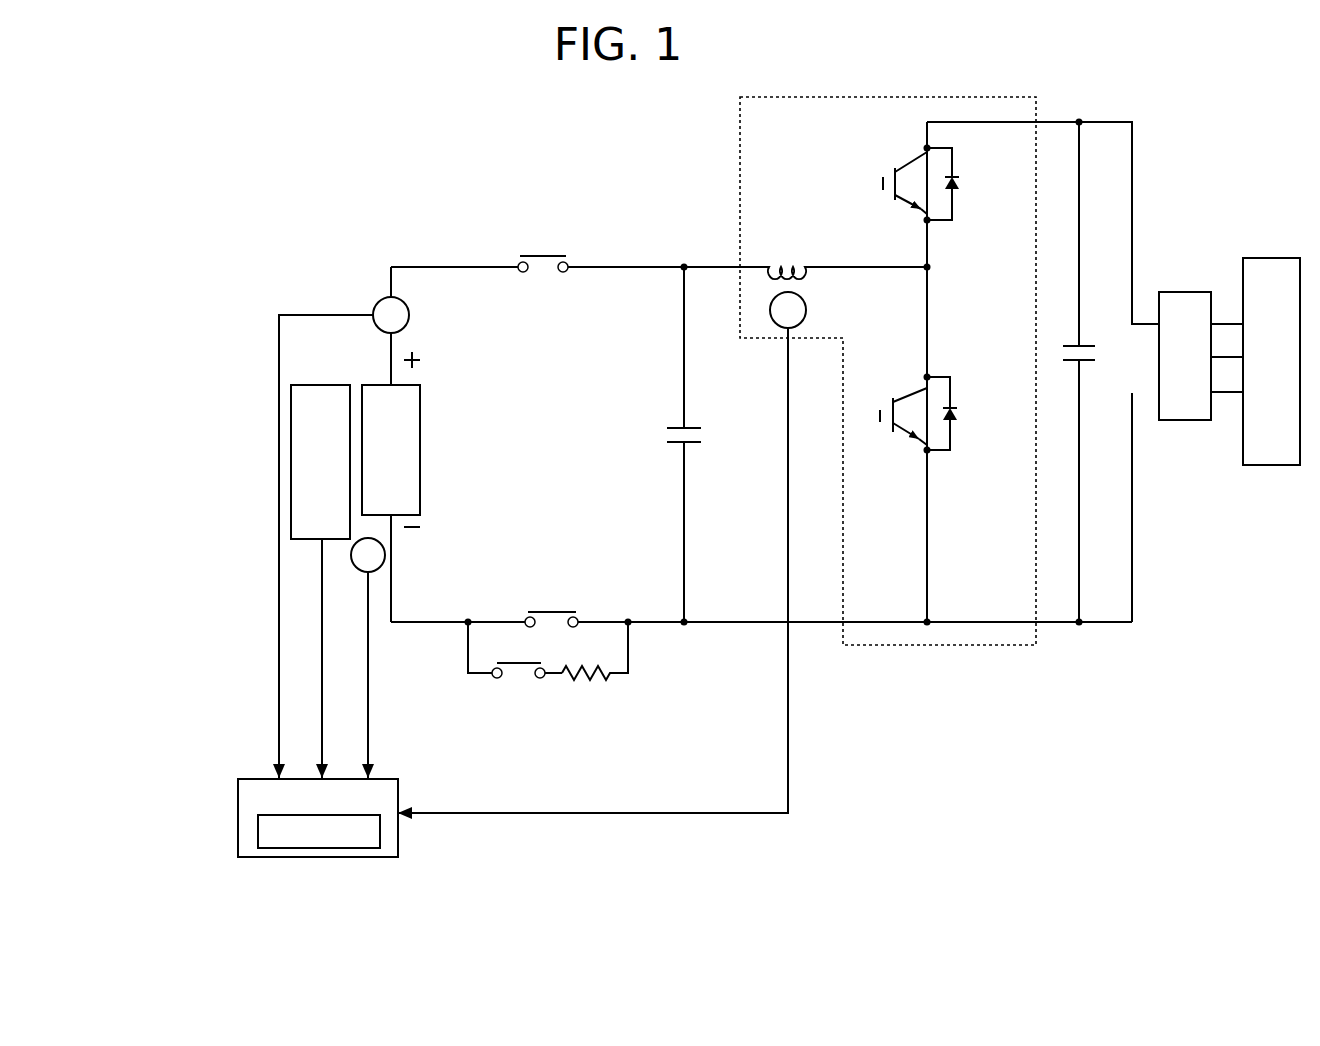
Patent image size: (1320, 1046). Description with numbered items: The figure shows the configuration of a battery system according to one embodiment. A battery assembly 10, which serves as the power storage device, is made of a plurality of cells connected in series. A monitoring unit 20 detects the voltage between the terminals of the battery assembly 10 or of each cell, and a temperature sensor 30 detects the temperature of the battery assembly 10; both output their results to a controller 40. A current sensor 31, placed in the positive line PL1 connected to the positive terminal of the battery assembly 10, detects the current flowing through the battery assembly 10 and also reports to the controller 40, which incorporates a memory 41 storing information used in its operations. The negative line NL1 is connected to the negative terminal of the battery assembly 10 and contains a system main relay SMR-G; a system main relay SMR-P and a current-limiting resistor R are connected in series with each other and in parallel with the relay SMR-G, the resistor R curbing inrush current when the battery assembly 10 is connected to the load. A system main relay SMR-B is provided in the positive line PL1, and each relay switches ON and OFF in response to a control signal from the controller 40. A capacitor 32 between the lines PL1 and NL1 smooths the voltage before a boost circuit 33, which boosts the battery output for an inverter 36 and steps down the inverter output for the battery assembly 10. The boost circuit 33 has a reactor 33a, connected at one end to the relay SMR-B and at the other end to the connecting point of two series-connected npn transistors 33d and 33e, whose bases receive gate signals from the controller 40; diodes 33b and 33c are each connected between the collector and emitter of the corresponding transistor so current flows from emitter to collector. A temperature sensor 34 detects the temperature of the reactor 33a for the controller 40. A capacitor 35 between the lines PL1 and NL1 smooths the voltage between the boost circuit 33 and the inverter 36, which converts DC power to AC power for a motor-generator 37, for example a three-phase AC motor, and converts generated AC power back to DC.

The battery assembly 10 is at (420, 447).
The monitoring unit 20 is at (322, 385).
The temperature sensor 30 is at (358, 568).
The current sensor 31 is at (378, 305).
The capacitor 32 is at (667, 435).
The boost circuit 33 is at (890, 97).
The reactor 33a is at (790, 262).
The diode 33b is at (962, 185).
The diode 33c is at (962, 415).
The transistor 33d is at (893, 168).
The transistor 33e is at (888, 435).
The temperature sensor 34 is at (806, 310).
The capacitor 35 is at (1086, 364).
The inverter 36 is at (1178, 420).
The motor-generator 37 is at (1258, 465).
The controller 40 is at (238, 800).
The memory 41 is at (258, 835).
The positive line PL1 is at (432, 267).
The negative line NL1 is at (430, 622).
The system main relay SMR-B is at (540, 250).
The system main relay SMR-G is at (562, 610).
The system main relay SMR-P is at (525, 682).
The current-limiting resistor R is at (602, 680).